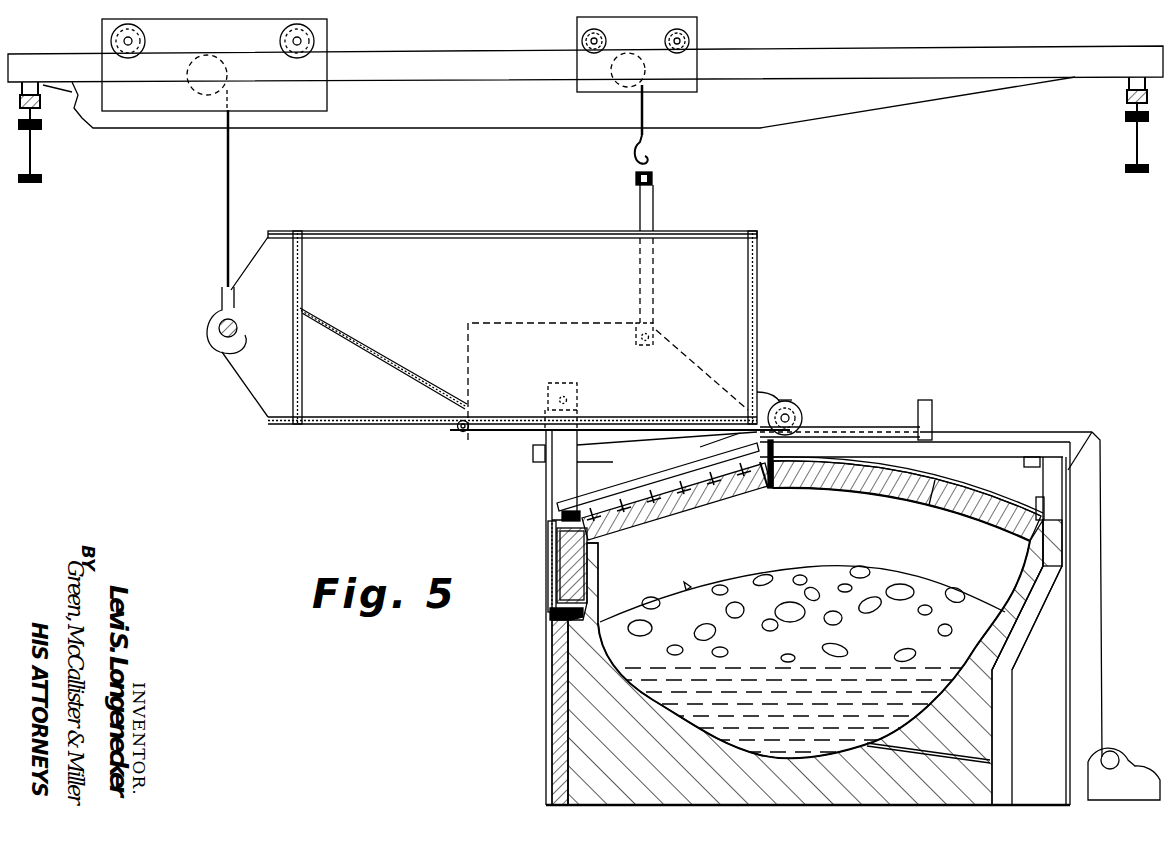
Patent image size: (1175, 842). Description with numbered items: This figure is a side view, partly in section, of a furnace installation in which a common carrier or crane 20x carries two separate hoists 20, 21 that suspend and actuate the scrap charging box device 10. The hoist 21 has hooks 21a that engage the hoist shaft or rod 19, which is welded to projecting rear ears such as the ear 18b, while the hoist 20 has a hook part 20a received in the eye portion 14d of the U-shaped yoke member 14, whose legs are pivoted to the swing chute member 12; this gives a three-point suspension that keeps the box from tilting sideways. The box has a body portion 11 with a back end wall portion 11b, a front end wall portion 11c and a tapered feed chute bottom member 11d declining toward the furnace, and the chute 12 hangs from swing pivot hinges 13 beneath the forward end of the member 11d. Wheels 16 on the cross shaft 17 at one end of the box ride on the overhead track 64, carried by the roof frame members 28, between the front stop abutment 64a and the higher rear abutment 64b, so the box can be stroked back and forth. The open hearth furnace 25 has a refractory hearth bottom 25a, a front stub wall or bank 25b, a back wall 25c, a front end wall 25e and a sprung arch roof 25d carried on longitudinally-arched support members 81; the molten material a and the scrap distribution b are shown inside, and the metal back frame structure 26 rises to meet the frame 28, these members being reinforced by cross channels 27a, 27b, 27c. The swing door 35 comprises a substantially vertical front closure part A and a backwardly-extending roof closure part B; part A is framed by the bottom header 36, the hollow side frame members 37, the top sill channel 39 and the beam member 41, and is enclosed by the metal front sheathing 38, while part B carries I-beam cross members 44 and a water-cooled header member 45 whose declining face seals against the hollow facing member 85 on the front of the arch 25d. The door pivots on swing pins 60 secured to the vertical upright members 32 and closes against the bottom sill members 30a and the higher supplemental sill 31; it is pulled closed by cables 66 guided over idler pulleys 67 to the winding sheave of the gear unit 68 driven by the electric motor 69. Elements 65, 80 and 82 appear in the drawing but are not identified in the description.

The common carrier or crane 20x is at (845, 70).
The hoist 21 is at (220, 48).
The hoist 20 is at (618, 46).
The hook part 20a is at (636, 157).
The eye portion 14d is at (648, 150).
The U-shaped bifurcated frame or yoke member 14 is at (655, 210).
The charging box device 10 is at (513, 221).
The body portion 11 is at (386, 236).
The back end wall portion 11b is at (303, 291).
The front end wall portion 11c is at (758, 291).
The tapered feed chute bottom member 11d is at (393, 365).
The tab or ear 18b is at (246, 385).
The hoist shaft or rod 19 is at (218, 328).
The hook portions 21a is at (214, 350).
The swing pivot hinges 13 is at (456, 428).
The swing chute member 12 is at (510, 432).
The vertical upright frame members 32 is at (540, 390).
The pivot or swing pins 60 is at (548, 396).
The idler pulley means 67 is at (745, 420).
The bottom door sill members 30a is at (553, 740).
The upper supplemental sill member 31 is at (553, 648).
The vertical side header and hollow side frame members 37 is at (552, 489).
The cross channel member 27b is at (533, 458).
The transversely-extending beam member 41 is at (560, 515).
The top sill channel 39 is at (552, 526).
The metal front sheathing 38 is at (552, 553).
The front closure part A is at (560, 565).
The bottom header and hollow frame member 36 is at (549, 612).
The swing door construction 35 is at (586, 493).
The cross members 44 is at (637, 490).
The roof closure part B is at (690, 514).
The lid edge 65 is at (705, 445).
The header member 45 is at (762, 490).
The hollow facing member 85 is at (773, 487).
The refractory front end wall portion 25e is at (598, 580).
The rollers or wheels 16 is at (803, 416).
The front stop abutment 64a is at (780, 402).
The cross shaft 17 is at (800, 410).
The overhead track 64 is at (900, 428).
The rear abutment portion 64b is at (932, 406).
The metal roof frame members 28 is at (995, 443).
The hood outer plate 80 is at (910, 452).
The refractory sprung arch or roof 25d is at (860, 493).
The longitudinally-arched support members 81 is at (940, 504).
The hood inner face 82 is at (970, 516).
The cross channel member 27c is at (1024, 462).
The cross channel member 27a is at (1038, 505).
The cables 66 is at (1050, 432).
The metal back frame structure 26 is at (1025, 644).
The open hearth furnace 25 is at (828, 565).
The refractory front stub wall or bank portion 25b is at (613, 668).
The refractory hearth floor or bottom portion 25a is at (808, 756).
The refractory back wall 25c is at (990, 622).
The scrap metal distribution b is at (753, 578).
The molten material a is at (803, 670).
The electric motor 69 is at (1136, 768).
The gear unit 68 is at (1112, 751).